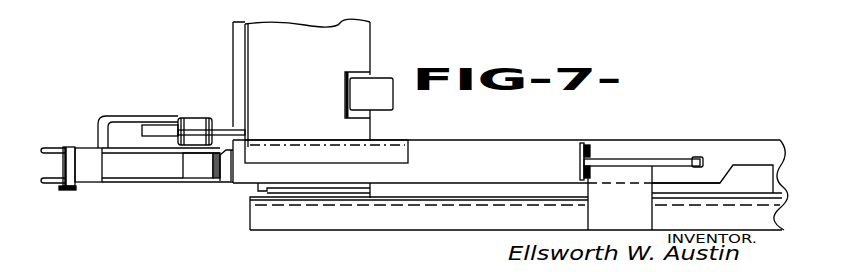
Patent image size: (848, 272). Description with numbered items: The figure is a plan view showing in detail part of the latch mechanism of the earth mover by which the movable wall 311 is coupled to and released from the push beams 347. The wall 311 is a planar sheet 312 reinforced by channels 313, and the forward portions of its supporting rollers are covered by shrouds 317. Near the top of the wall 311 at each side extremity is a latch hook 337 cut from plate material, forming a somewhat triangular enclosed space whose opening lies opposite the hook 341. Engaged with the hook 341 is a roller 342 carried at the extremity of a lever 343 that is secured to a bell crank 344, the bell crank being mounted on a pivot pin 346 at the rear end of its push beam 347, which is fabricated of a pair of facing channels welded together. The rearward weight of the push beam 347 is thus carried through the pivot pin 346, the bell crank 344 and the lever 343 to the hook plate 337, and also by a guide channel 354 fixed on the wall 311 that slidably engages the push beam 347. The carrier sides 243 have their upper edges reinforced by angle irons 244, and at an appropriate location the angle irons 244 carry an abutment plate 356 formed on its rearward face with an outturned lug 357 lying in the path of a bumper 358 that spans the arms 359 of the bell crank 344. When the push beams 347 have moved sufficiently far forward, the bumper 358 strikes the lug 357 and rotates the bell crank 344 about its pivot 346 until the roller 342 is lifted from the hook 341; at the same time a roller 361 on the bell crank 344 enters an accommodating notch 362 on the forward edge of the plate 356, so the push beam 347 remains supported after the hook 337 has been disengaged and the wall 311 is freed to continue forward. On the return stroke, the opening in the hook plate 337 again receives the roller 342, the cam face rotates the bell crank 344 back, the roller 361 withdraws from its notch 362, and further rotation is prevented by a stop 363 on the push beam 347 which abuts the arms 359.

The carrier side 243 is at (400, 198).
The angle irons 244 is at (740, 217).
The movable wall 311 is at (370, 28).
The planar sheet 312 is at (355, 47).
The channels 313 is at (233, 33).
The shrouds 317 is at (389, 102).
The latch hooks 337 is at (190, 150).
The hook 341 is at (157, 129).
The roller 342 is at (200, 120).
The lever 343 is at (107, 115).
The bell crank 344 is at (138, 150).
The pivot pin 346 is at (68, 190).
The push beams 347 is at (470, 147).
The guide channel 354 is at (297, 150).
The abutment plate 356 is at (628, 162).
The outturned lug 357 is at (585, 142).
The bumper 358 is at (63, 147).
The arms 359 is at (43, 178).
The roller 361 is at (192, 170).
The notch 362 is at (700, 157).
The stop 363 is at (92, 180).